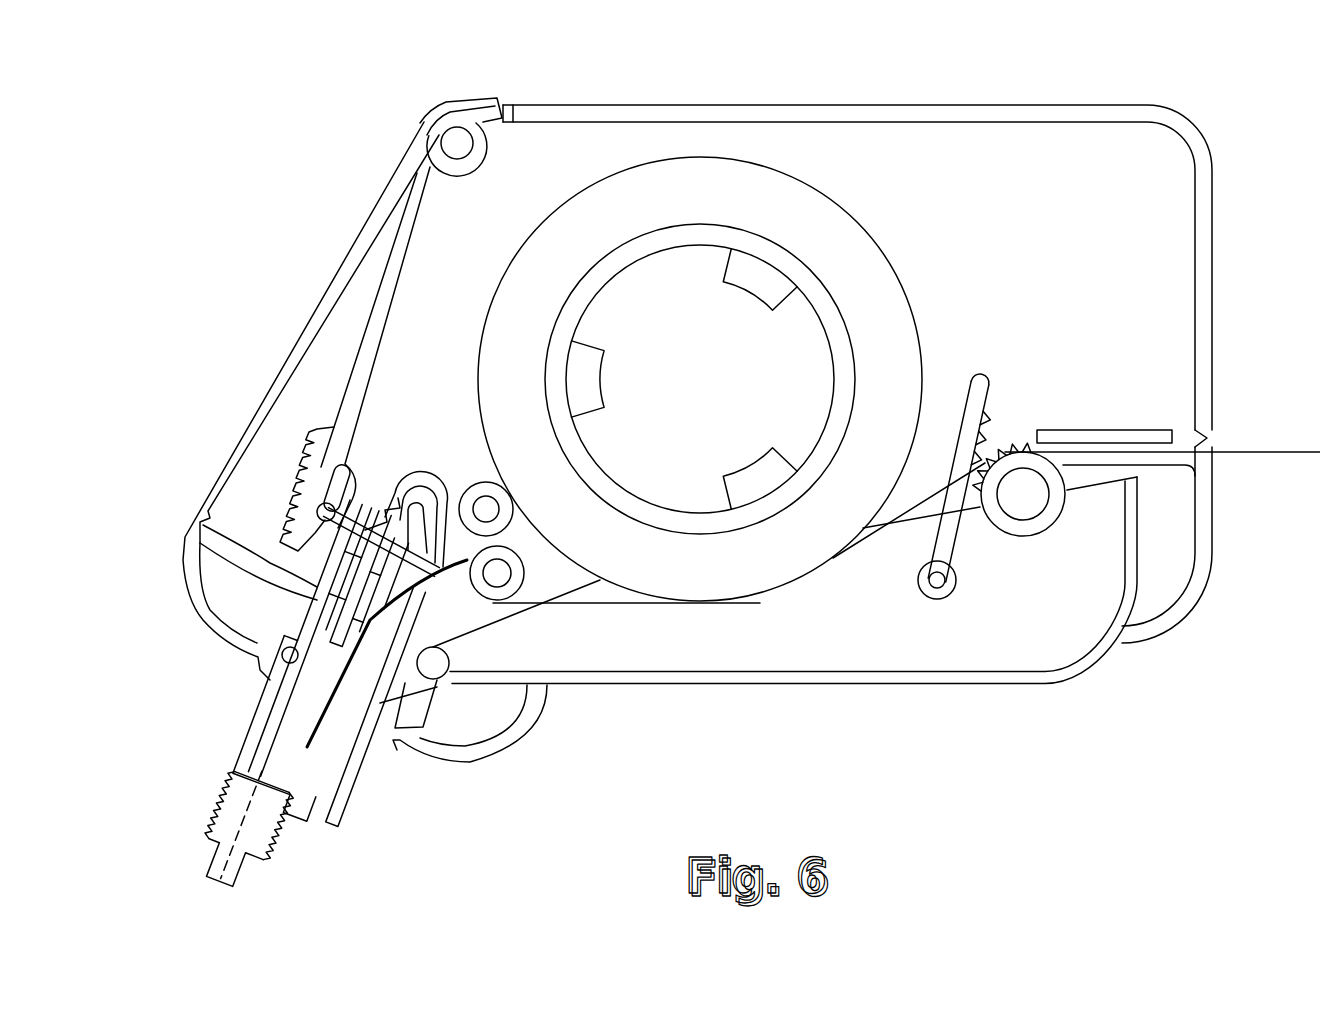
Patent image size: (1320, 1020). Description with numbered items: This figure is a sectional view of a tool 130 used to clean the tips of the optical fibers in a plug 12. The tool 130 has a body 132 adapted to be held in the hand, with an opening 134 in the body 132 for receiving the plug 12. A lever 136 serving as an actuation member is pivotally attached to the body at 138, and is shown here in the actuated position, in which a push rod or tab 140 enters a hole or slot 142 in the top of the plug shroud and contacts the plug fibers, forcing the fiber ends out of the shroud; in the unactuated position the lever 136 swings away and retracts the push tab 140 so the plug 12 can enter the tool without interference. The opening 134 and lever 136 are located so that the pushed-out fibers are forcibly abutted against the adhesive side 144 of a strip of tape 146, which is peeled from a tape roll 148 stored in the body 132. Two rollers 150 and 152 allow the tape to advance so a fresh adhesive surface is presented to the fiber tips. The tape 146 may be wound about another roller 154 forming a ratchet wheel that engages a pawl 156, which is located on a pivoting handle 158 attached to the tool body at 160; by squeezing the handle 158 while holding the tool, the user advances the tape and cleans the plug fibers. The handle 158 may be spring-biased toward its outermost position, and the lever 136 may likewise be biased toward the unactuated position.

The plug 12 is at (230, 740).
The tool 130 is at (827, 386).
The body 132 is at (1213, 312).
The opening 134 is at (410, 695).
The lever 136 is at (370, 348).
The pivot 138 is at (450, 138).
The push tab 140 is at (413, 547).
The slot 142 is at (372, 522).
The adhesive side 144 is at (594, 610).
The tape 146 is at (1253, 452).
The tape roll 148 is at (878, 268).
The roller 150 is at (490, 508).
The roller 152 is at (501, 573).
The roller 154 is at (1018, 538).
The pawl 156 is at (985, 395).
The handle 158 is at (965, 686).
The attachment point 160 is at (440, 663).